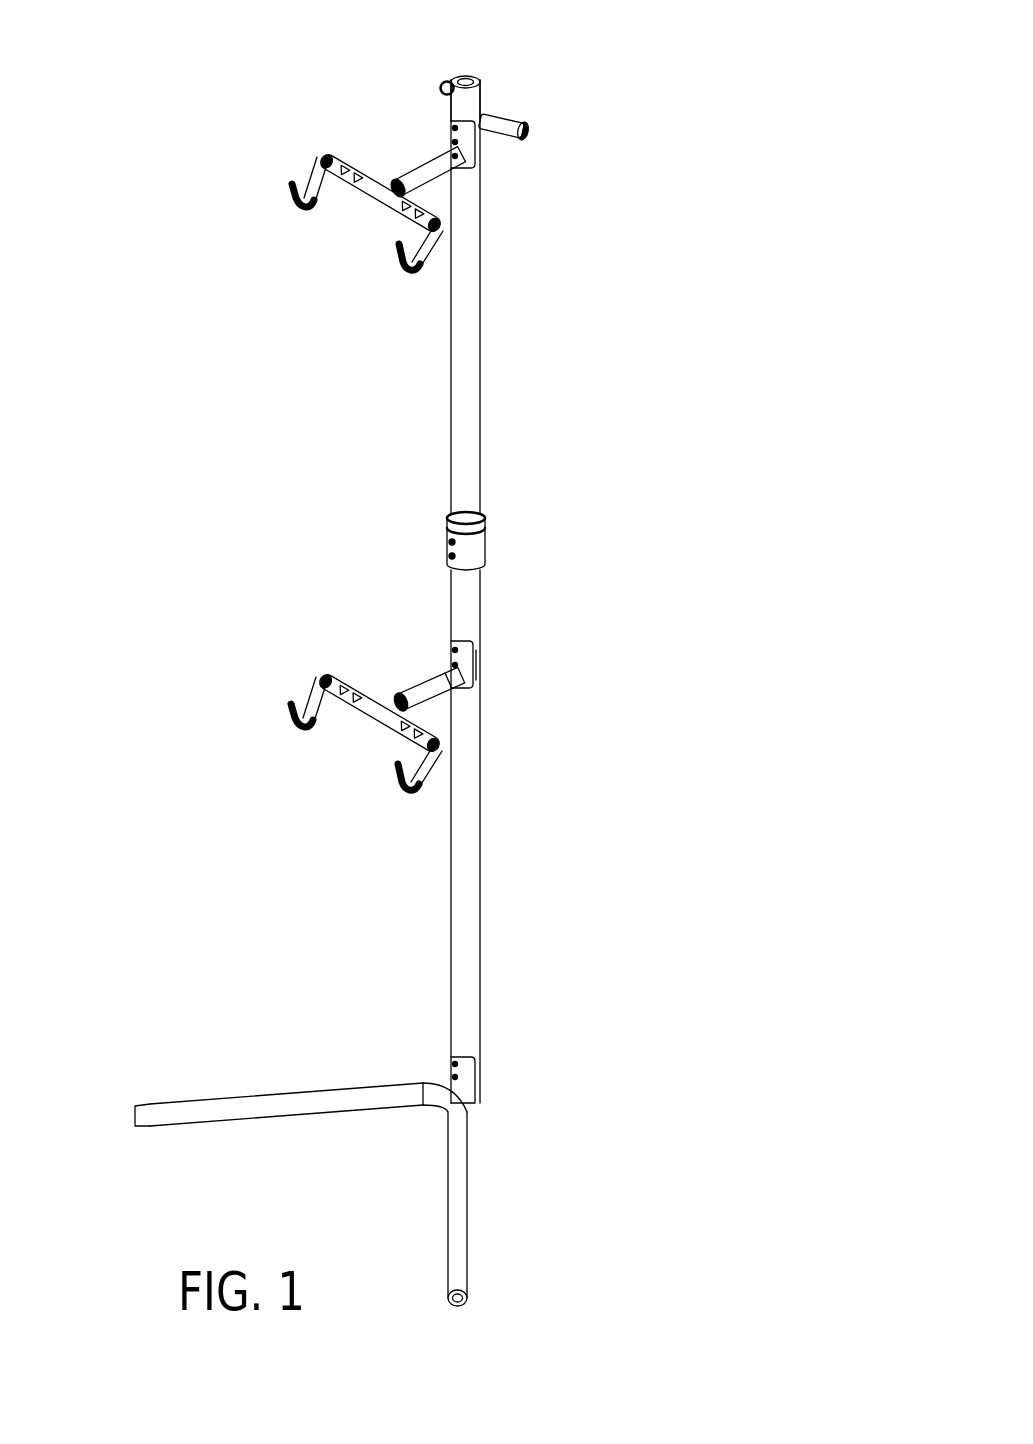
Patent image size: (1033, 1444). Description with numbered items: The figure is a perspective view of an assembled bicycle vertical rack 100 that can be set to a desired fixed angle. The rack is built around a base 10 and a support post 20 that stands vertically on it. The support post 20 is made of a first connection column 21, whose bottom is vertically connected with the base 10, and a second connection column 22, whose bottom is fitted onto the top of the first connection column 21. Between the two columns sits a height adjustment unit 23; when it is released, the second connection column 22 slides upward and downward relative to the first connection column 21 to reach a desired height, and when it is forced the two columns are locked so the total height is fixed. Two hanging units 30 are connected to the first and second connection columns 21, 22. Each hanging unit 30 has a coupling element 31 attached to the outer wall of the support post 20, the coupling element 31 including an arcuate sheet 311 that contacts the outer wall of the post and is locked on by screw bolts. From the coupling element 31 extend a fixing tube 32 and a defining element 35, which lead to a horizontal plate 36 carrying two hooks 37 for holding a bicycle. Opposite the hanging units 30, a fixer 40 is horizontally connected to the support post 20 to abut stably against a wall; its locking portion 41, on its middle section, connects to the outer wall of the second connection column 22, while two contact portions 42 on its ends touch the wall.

The bicycle vertical rack 100 is at (660, 176).
The base 10 is at (458, 1181).
The support post 20 is at (647, 363).
The first connection column 21 is at (472, 785).
The second connection column 22 is at (471, 400).
The height adjustment unit 23 is at (485, 521).
The hanging unit 30 is at (246, 183).
The coupling element 31 is at (486, 626).
The arcuate sheet 311 is at (476, 668).
The fixing tube 32 is at (438, 678).
The defining element 35 is at (418, 688).
The horizontal plate 36 is at (360, 691).
The hook 37 is at (299, 719).
The fixer 40 is at (614, 42).
The locking portion 41 is at (482, 114).
The contact portion 42 is at (447, 80).